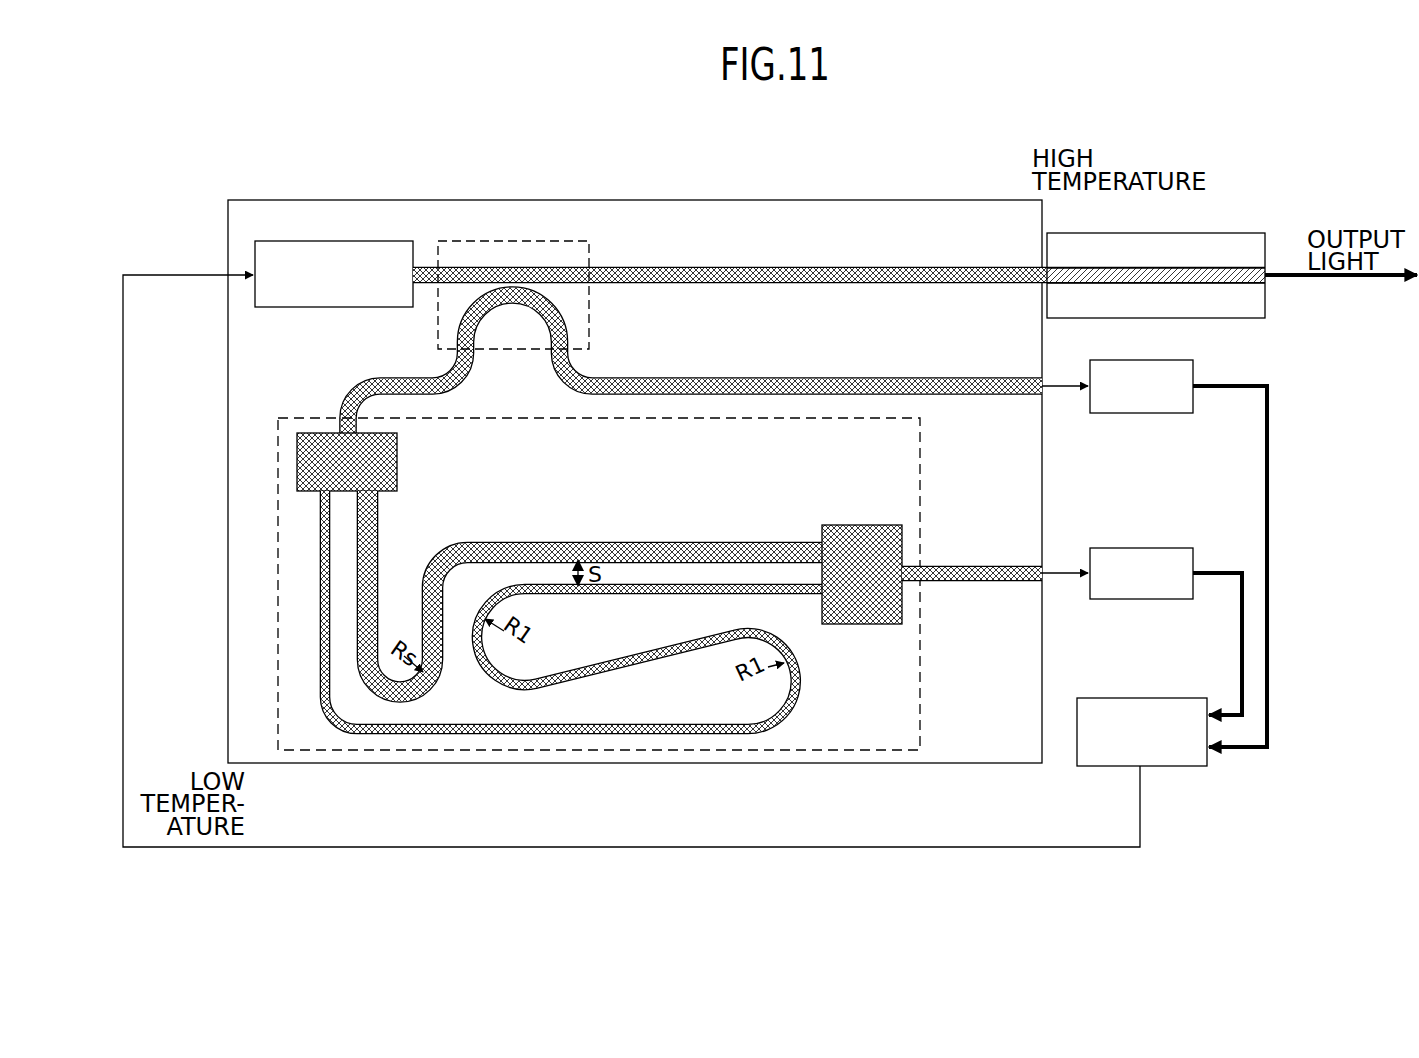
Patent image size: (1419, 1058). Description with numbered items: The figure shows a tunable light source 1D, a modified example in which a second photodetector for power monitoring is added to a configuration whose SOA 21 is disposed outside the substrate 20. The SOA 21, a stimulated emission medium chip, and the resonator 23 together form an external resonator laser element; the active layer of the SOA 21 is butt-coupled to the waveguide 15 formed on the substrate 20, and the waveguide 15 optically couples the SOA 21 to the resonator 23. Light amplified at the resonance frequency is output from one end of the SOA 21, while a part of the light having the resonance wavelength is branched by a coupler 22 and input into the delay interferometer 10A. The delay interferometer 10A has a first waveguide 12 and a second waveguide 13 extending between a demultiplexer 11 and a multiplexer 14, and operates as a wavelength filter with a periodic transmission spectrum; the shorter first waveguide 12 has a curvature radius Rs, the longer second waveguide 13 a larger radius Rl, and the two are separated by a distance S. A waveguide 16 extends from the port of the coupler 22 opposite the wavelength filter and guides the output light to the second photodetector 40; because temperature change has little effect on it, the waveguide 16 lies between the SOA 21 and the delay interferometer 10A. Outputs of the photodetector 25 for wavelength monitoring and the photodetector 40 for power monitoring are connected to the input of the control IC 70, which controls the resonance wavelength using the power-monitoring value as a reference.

The tunable light source 1D is at (1374, 147).
The delay interferometer 10A is at (920, 456).
The demultiplexer 11 is at (397, 458).
The first waveguide 12 is at (748, 541).
The second waveguide 13 is at (625, 724).
The multiplexer 14 is at (862, 524).
The waveguide 15 is at (748, 266).
The waveguide 16 is at (748, 377).
The substrate 20 is at (920, 198).
The SOA 21 is at (1210, 232).
The coupler 22 is at (528, 234).
The resonator 23 is at (357, 240).
The photodetector 25 is at (1140, 548).
The second photodetector 40 is at (1140, 360).
The control IC 70 is at (1160, 698).